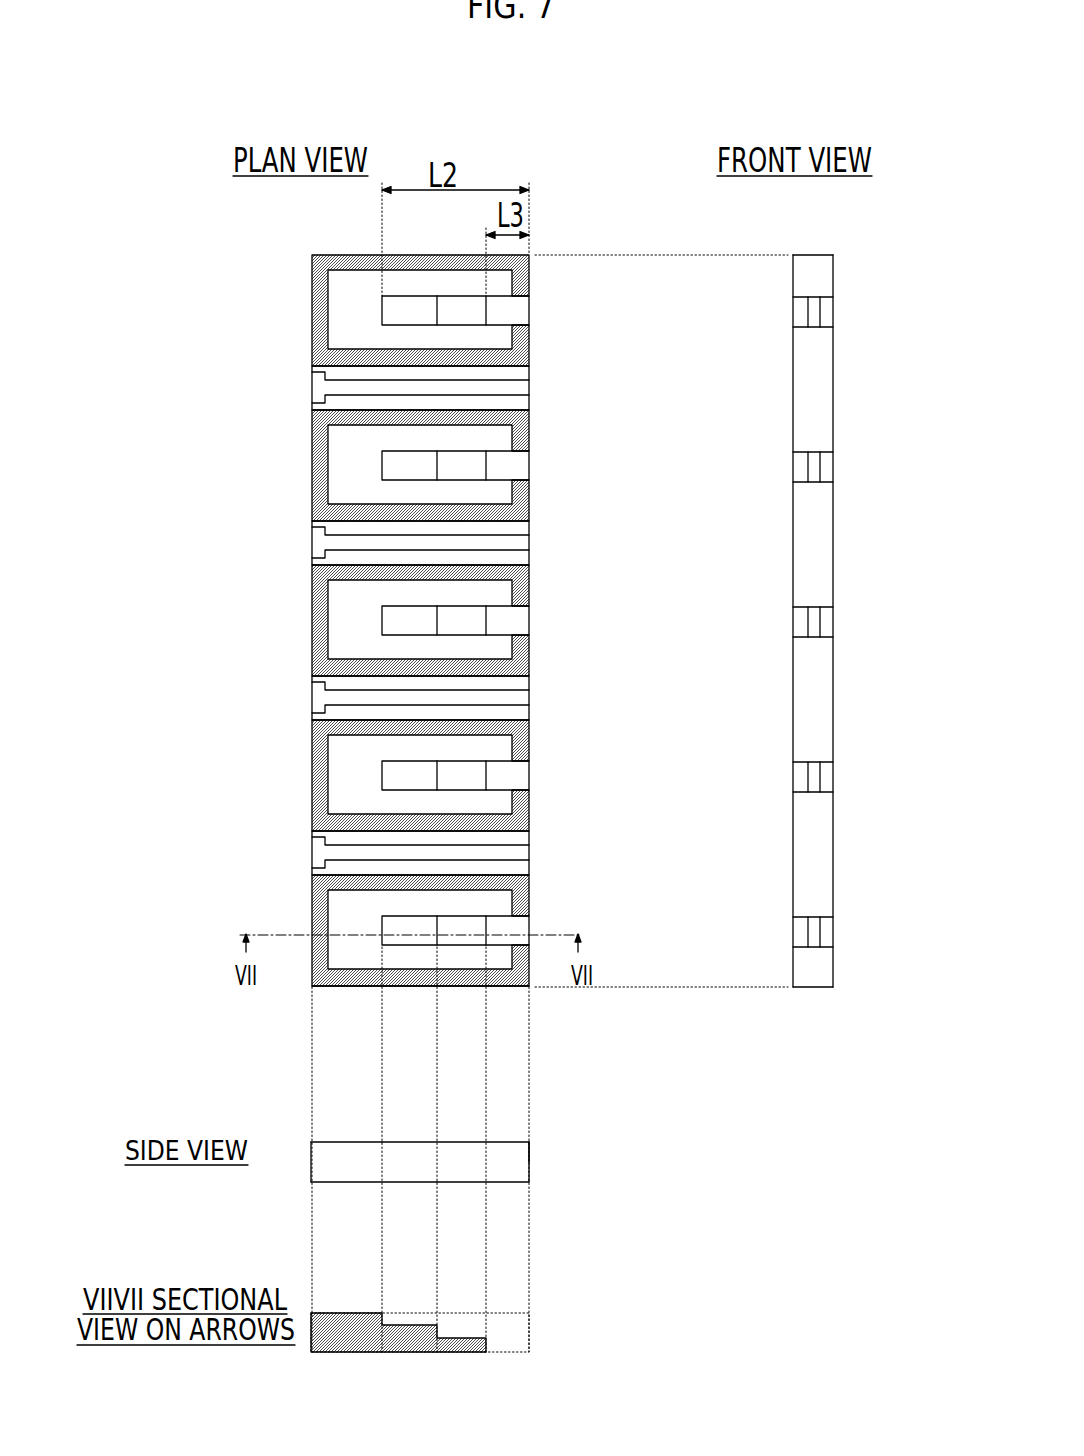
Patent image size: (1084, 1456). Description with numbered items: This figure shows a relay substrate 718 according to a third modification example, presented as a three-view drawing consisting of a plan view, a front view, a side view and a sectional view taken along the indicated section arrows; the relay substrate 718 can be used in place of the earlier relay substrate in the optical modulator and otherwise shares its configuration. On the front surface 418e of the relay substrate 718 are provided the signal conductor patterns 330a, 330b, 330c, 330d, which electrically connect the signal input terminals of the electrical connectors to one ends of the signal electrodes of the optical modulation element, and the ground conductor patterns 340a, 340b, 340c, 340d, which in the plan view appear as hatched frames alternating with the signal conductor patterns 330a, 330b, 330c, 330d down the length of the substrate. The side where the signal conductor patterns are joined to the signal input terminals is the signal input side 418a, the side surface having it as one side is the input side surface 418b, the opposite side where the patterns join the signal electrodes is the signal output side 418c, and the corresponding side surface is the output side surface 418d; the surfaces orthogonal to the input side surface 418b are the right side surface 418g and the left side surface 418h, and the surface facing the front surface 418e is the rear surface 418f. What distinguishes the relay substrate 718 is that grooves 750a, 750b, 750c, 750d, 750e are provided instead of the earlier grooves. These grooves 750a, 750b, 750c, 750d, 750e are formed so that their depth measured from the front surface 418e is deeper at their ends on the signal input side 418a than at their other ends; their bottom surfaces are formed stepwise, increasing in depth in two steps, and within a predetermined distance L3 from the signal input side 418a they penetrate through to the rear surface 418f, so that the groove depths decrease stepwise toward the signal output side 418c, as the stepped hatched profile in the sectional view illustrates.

The relay substrate 718 is at (539, 100).
The ground conductor pattern 340a is at (300, 257).
The ground conductor pattern 340b is at (300, 412).
The ground conductor pattern 340c is at (300, 567).
The ground conductor pattern 340d is at (300, 722).
The signal conductor pattern 330a is at (322, 388).
The signal conductor pattern 330b is at (322, 545).
The signal conductor pattern 330c is at (322, 703).
The signal conductor pattern 330d is at (322, 869).
The groove 750a is at (512, 312).
The groove 750b is at (512, 467).
The groove 750c is at (512, 622).
The groove 750d is at (512, 777).
The groove 750e is at (512, 923).
The signal input side 418a is at (529, 1142).
The input side surface 418b is at (810, 977).
The signal output side 418c is at (311, 1142).
The output side surface 418d is at (312, 970).
The front surface 418e is at (793, 812).
The rear surface 418f is at (833, 850).
The right side surface 418g is at (829, 256).
The left side surface 418h is at (818, 987).